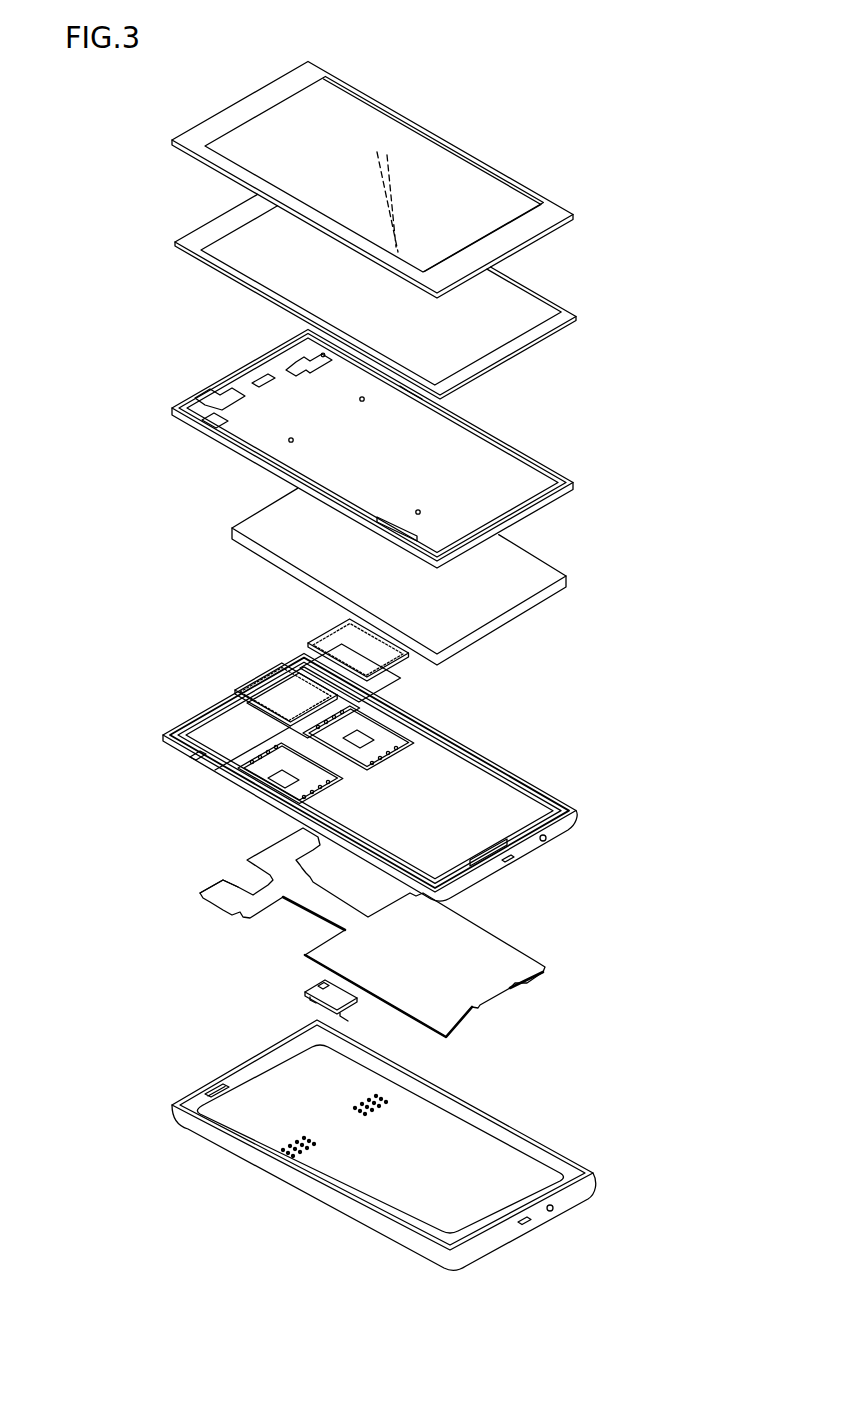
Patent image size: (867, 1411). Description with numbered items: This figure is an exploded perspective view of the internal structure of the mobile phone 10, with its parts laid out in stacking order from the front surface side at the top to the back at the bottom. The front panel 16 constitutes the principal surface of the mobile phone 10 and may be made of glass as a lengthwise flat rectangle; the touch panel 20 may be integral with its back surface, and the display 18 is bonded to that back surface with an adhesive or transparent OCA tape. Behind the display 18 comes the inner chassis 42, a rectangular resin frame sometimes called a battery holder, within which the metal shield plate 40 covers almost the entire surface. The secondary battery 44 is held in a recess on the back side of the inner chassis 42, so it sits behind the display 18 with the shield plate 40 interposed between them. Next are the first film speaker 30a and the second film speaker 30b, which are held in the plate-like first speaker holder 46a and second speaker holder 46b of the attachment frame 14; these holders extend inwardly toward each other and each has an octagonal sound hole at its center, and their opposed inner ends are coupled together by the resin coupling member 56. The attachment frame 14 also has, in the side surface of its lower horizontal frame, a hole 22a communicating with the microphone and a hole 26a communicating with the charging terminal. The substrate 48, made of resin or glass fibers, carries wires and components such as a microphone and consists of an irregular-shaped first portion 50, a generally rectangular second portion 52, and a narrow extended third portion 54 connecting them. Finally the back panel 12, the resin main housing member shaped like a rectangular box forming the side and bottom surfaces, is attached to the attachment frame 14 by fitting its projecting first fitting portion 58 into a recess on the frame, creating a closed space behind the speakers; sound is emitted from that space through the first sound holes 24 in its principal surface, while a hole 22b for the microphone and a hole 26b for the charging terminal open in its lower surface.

The mobile phone 10 is at (155, 80).
The back panel 12 is at (391, 1146).
The attachment frame 14 is at (385, 777).
The front panel 16 is at (374, 180).
The display 18 is at (548, 310).
The touch panel 20 is at (457, 170).
The hole communicating with the microphone 22a is at (546, 841).
The hole communicating with the microphone 22b is at (553, 1211).
The first sound holes 24 is at (320, 1153).
The hole communicating with the charging terminal 26a is at (513, 863).
The hole communicating with the charging terminal 26b is at (523, 1228).
The first film speaker 30a is at (262, 672).
The second film speaker 30b is at (397, 663).
The shield plate 40 is at (372, 449).
The inner chassis 42 is at (473, 420).
The secondary battery 44 is at (538, 562).
The first speaker holder 46a is at (340, 787).
The second speaker holder 46b is at (377, 768).
The substrate 48 is at (379, 932).
The first portion 50 is at (220, 903).
The second portion 52 is at (528, 985).
The third portion 54 is at (313, 908).
The coupling member 56 is at (342, 993).
The first fitting portion 58 is at (498, 1122).